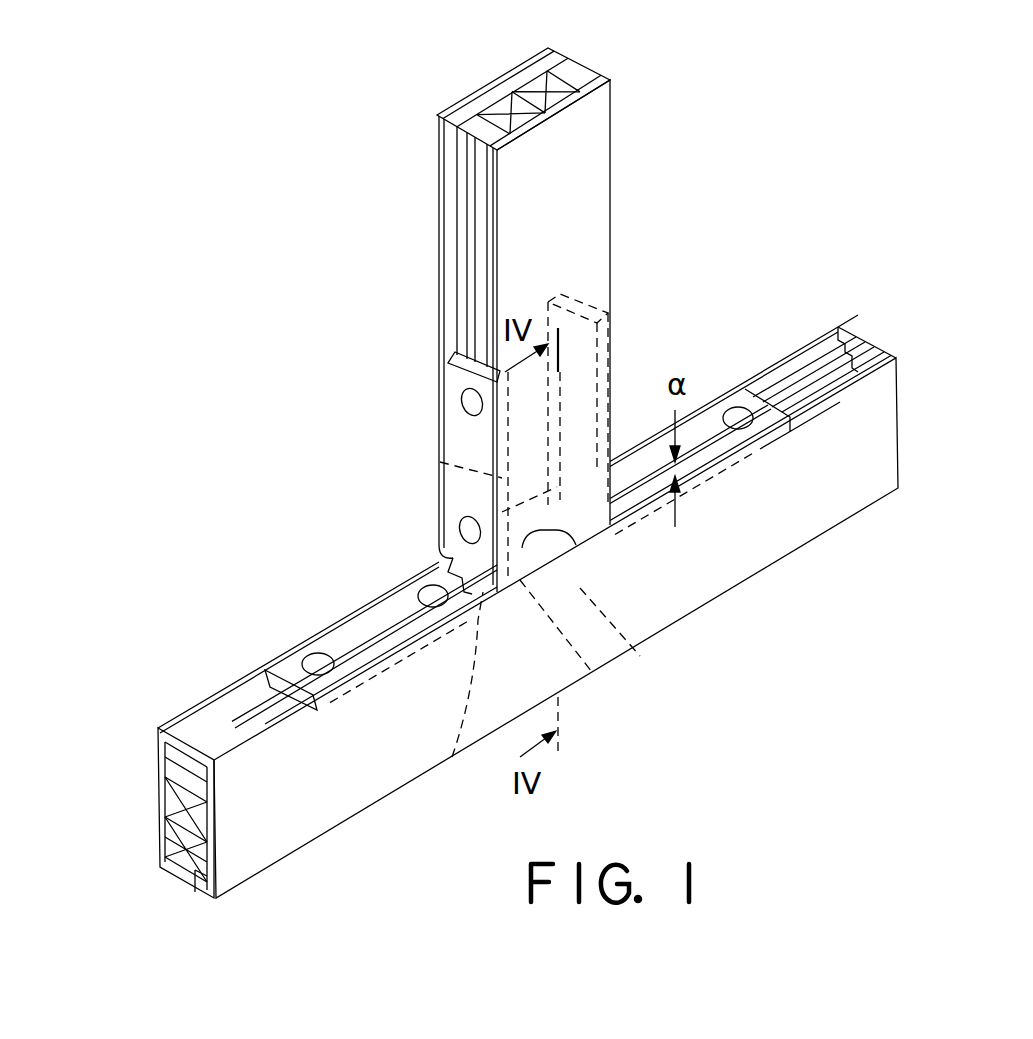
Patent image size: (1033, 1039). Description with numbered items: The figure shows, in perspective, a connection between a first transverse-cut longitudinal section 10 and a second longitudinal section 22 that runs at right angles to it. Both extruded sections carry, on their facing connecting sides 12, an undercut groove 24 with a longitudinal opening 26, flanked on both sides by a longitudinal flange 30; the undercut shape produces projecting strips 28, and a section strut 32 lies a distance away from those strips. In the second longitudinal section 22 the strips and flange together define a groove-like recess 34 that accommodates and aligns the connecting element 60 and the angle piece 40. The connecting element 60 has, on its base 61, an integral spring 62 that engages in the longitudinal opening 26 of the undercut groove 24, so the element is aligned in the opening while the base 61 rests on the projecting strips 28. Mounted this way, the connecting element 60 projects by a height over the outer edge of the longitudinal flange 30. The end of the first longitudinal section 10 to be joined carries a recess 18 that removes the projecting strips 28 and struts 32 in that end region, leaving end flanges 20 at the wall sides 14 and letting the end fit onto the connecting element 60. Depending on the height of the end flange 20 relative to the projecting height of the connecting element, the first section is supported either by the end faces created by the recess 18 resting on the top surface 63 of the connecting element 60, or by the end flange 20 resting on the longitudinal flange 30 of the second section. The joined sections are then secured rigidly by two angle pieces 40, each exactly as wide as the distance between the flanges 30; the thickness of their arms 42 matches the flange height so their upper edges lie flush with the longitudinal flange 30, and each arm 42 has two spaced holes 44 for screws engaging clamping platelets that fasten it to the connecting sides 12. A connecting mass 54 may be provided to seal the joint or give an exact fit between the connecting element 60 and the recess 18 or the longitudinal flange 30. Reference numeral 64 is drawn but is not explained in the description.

The first longitudinal section 10 is at (628, 145).
The connecting sides 12 is at (467, 302).
The wall sides 14 is at (578, 228).
The recess 18 is at (599, 709).
The end flanges 20 is at (615, 527).
The second longitudinal section 22 is at (334, 807).
The undercut groove 24 is at (480, 118).
The longitudinal opening 26 is at (472, 197).
The projecting strips 28 is at (460, 100).
The longitudinal flange 30 is at (437, 118).
The section strut 32 is at (560, 74).
The groove-like recess 34 is at (843, 337).
The angle piece 40 is at (365, 618).
The arms 42 is at (455, 358).
The holes 44 is at (462, 402).
The connecting mass 54 is at (603, 518).
The connecting element 60 is at (502, 512).
The base 61 is at (456, 697).
The spring 62 is at (603, 634).
The top surface 63 is at (440, 462).
The locating pin 64 is at (440, 558).